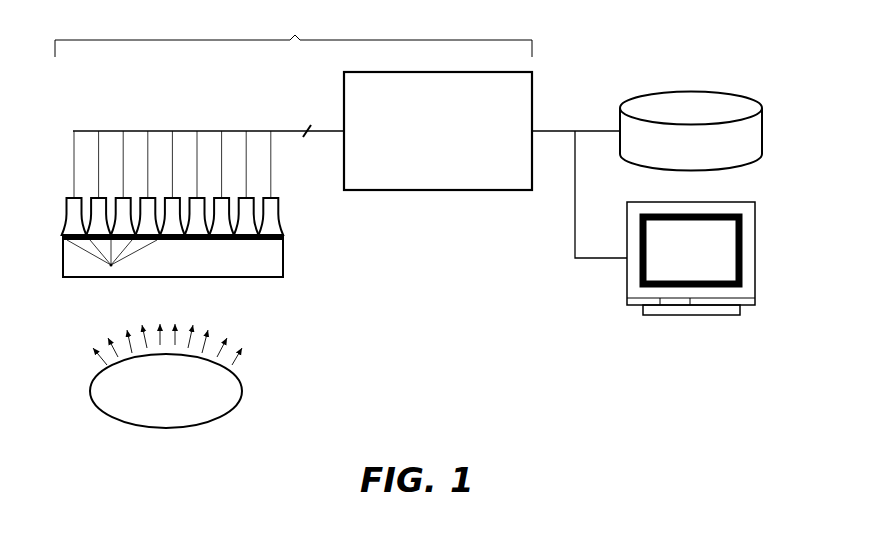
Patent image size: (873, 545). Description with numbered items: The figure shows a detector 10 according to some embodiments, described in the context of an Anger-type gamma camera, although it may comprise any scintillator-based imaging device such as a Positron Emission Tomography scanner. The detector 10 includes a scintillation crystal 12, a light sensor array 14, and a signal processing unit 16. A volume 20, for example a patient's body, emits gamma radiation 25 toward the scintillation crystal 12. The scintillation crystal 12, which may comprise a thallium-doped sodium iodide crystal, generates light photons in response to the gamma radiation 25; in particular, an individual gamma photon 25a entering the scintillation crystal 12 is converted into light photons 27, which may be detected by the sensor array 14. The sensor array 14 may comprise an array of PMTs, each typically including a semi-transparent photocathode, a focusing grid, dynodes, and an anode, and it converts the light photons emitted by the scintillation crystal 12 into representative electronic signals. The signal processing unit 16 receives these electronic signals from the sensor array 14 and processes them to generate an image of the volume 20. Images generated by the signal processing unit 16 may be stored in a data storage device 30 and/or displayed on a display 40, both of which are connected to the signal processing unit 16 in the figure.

The detector 10 is at (293, 35).
The scintillation crystal 12 is at (283, 262).
The light sensor array 14 is at (52, 225).
The signal processing unit 16 is at (473, 72).
The volume 20 is at (242, 393).
The gamma radiation 25 is at (86, 360).
The gamma photon 25a is at (112, 268).
The light photons 27 is at (125, 255).
The data storage device 30 is at (727, 95).
The display 40 is at (728, 202).